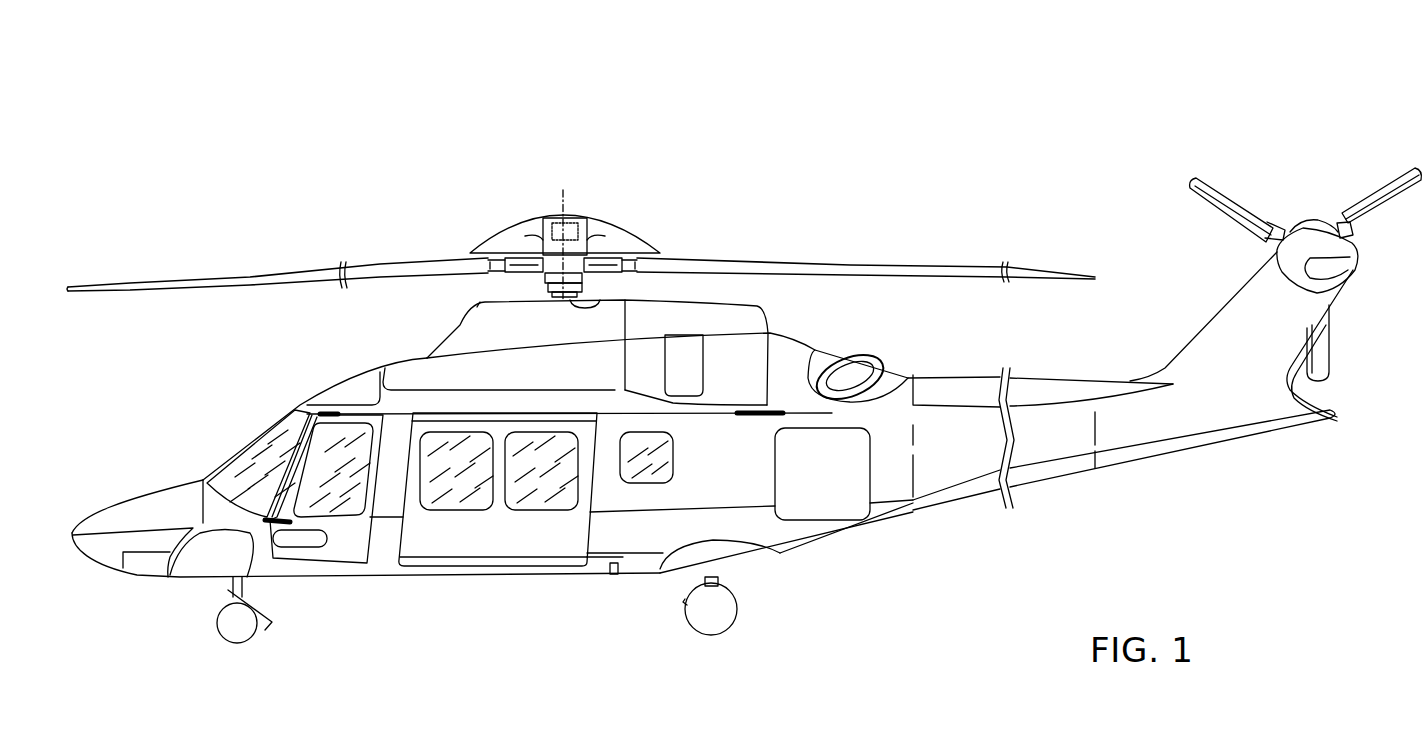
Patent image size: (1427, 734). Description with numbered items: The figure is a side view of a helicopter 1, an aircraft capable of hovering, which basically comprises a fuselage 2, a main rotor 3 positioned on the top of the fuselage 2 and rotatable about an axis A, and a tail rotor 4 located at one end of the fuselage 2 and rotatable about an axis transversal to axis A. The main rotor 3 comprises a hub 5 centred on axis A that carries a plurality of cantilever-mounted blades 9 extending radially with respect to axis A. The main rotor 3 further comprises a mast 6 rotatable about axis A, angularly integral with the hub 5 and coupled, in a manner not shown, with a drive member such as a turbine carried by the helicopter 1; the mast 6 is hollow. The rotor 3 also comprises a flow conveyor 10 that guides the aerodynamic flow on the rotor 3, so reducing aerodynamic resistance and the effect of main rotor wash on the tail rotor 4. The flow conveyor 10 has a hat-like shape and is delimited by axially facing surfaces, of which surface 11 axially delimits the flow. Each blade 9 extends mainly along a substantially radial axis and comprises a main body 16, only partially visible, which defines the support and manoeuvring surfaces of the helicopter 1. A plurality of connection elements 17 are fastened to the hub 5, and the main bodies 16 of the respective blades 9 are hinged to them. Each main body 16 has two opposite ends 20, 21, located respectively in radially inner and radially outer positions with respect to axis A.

The helicopter 1 is at (705, 200).
The fuselage 2 is at (490, 535).
The main rotor 3 is at (420, 252).
The tail rotor 4 is at (1318, 195).
The hub 5 is at (547, 274).
The mast 6 is at (593, 300).
The blades 9 is at (228, 280).
The flow conveyor 10 is at (540, 228).
The surface 11 is at (636, 225).
The main body 16 is at (347, 221).
The connection elements 17 is at (517, 263).
The end 20 is at (500, 261).
The end 21 is at (73, 285).
The axis A is at (573, 208).